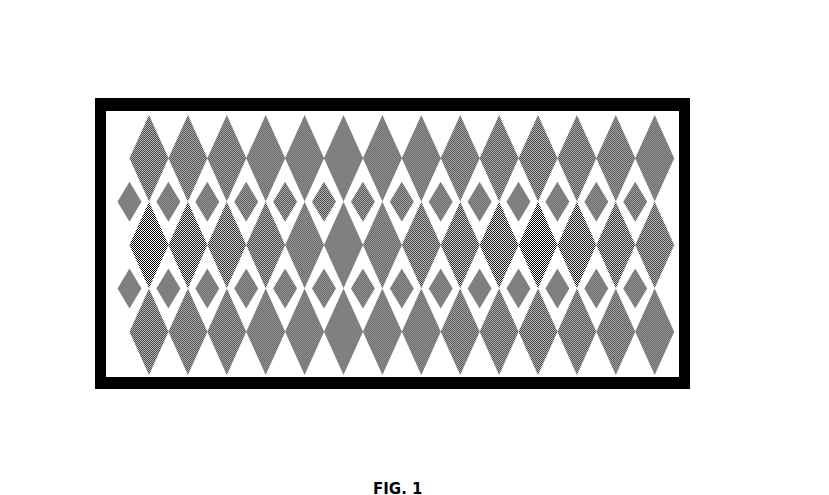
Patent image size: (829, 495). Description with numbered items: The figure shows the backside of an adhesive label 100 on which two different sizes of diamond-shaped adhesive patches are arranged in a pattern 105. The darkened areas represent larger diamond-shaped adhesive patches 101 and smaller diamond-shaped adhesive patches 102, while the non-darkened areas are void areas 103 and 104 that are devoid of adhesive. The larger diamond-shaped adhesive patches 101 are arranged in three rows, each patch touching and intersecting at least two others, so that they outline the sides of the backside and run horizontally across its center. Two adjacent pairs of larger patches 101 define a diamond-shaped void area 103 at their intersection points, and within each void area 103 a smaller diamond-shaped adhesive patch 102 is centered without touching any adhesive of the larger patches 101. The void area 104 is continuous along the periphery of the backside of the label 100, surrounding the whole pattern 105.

The adhesive label 100 is at (97, 153).
The larger diamond-shaped adhesive patch 101 is at (657, 160).
The smaller diamond-shaped adhesive patch 102 is at (120, 288).
The void area 103 is at (638, 308).
The void area 104 is at (210, 363).
The pattern 105 is at (675, 90).